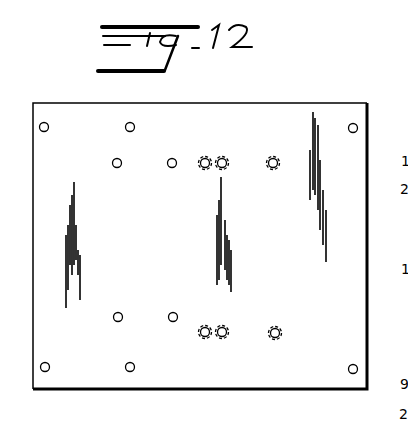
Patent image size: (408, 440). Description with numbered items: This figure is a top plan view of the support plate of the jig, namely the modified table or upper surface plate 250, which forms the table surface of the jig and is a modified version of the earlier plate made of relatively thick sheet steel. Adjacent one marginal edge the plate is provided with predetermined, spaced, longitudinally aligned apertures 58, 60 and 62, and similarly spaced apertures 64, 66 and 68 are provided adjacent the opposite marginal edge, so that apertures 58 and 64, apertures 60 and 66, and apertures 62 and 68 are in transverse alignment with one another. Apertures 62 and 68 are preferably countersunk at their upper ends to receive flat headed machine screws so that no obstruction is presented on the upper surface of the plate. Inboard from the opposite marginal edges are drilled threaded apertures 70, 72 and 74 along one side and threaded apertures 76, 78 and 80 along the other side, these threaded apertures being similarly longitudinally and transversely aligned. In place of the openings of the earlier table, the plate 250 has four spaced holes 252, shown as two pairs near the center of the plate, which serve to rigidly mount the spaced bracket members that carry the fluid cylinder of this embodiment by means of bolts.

The upper surface plate 250 is at (152, 382).
The spaced holes 252 is at (169, 160).
The aperture 58 is at (47, 131).
The aperture 60 is at (125, 128).
The aperture 62 is at (349, 126).
The aperture 64 is at (47, 362).
The aperture 66 is at (127, 363).
The aperture 68 is at (349, 365).
The threaded aperture 70 is at (205, 169).
The threaded aperture 72 is at (222, 157).
The threaded aperture 74 is at (273, 157).
The threaded aperture 76 is at (205, 338).
The threaded aperture 78 is at (222, 338).
The threaded aperture 80 is at (276, 339).